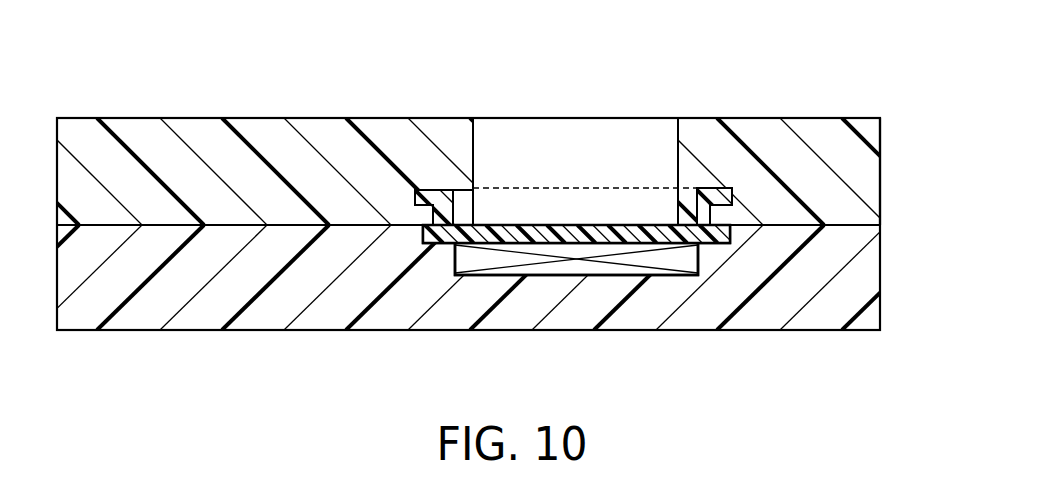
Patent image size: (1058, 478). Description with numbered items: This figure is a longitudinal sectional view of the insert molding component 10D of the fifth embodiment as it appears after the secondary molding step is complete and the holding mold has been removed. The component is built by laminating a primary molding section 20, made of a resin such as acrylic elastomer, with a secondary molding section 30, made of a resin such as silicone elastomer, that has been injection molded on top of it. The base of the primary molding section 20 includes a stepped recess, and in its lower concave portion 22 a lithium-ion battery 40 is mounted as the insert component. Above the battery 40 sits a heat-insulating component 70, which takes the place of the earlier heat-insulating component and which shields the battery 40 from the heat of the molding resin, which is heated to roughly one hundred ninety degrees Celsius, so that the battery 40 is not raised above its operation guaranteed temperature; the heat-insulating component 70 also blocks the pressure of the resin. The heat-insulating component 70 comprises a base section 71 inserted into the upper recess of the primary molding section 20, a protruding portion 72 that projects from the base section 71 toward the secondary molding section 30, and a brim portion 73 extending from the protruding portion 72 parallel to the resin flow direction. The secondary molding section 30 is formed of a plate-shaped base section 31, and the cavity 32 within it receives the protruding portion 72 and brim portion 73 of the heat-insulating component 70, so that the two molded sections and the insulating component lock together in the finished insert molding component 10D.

The insert molding component 10D is at (246, 336).
The primary molding section 20 is at (867, 278).
The lower concave portion 22 is at (698, 258).
The secondary molding section 30 is at (867, 173).
The base section 31 is at (827, 137).
The recess of lid 32 is at (677, 155).
The lithium-ion battery 40 is at (573, 268).
The heat-insulating component 70 is at (710, 187).
The base section 71 is at (488, 233).
The protruding portion 72 is at (447, 218).
The brim portion 73 is at (418, 197).